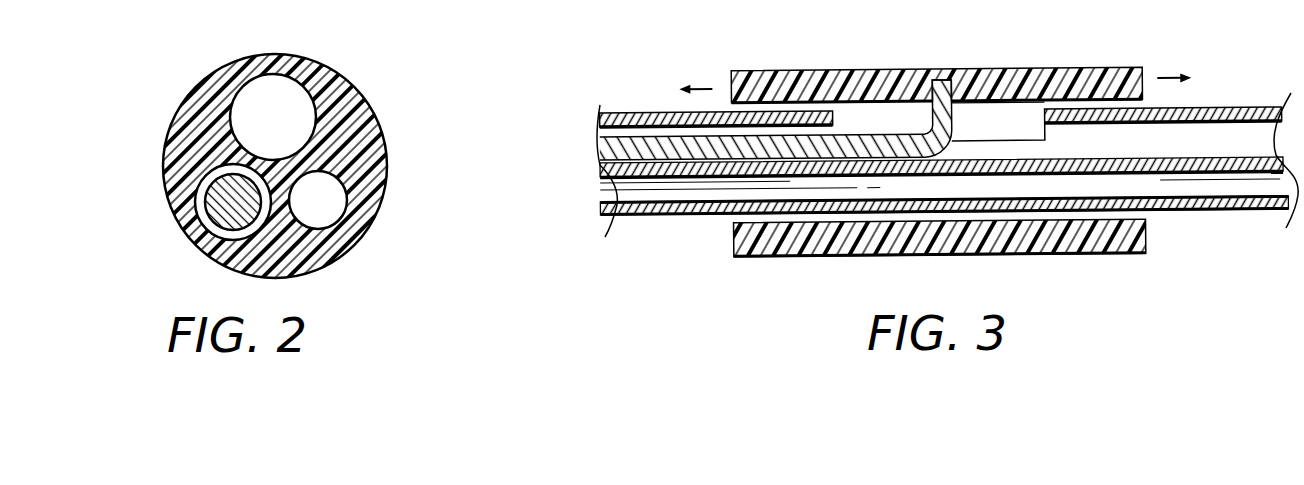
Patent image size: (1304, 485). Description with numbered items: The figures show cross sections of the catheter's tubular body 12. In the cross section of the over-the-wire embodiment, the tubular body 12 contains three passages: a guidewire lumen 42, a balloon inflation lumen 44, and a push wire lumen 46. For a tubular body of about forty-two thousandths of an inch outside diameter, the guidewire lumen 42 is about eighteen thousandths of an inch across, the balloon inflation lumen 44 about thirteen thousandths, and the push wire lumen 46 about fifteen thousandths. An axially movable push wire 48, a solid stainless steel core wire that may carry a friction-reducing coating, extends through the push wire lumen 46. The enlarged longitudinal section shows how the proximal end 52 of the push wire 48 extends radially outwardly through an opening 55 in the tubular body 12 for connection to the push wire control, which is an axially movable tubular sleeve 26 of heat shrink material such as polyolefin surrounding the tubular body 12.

In FIG. 2, the tubular body 12 is at (353, 117).
In FIG. 3, the tubular body 12 is at (634, 217).
In FIG. 2, the guidewire lumen 42 is at (270, 92).
In FIG. 2, the balloon inflation lumen 44 is at (330, 196).
In FIG. 3, the balloon inflation lumen 44 is at (1163, 187).
In FIG. 2, the push wire lumen 46 is at (221, 233).
In FIG. 2, the push wire 48 is at (203, 180).
In FIG. 3, the push wire 48 is at (650, 150).
In FIG. 3, the proximal end 52 is at (1030, 117).
In FIG. 3, the opening 55 is at (957, 114).
In FIG. 3, the tubular sleeve 26 is at (1058, 243).